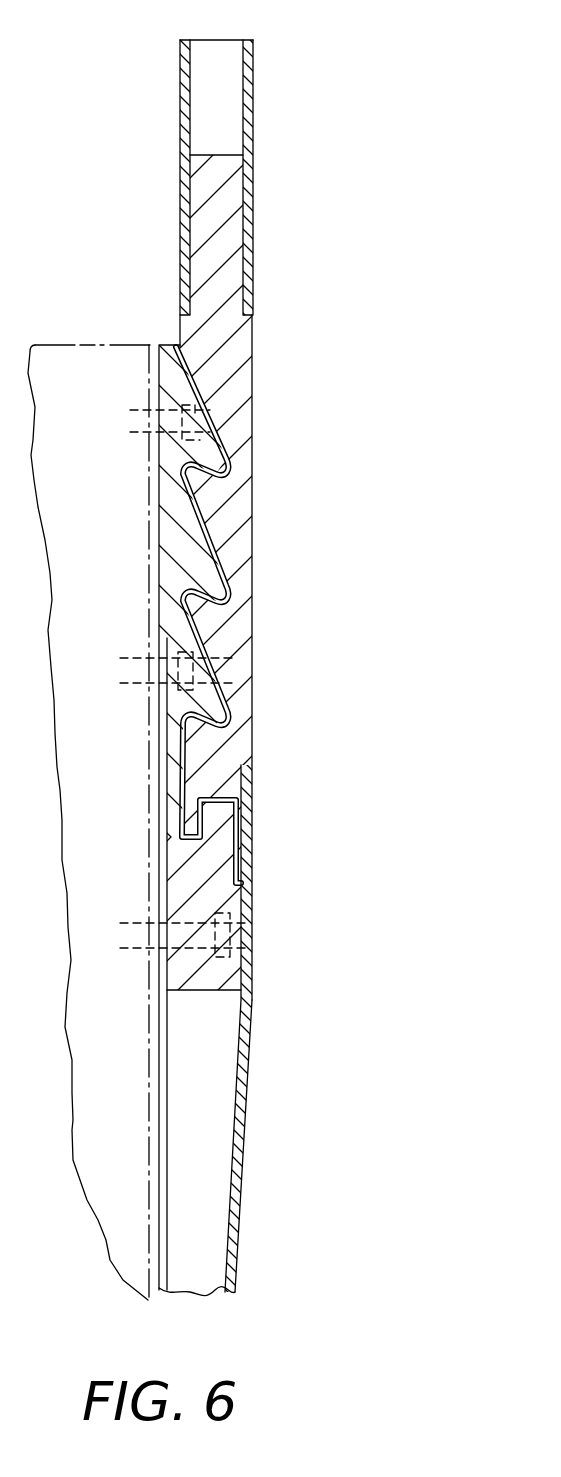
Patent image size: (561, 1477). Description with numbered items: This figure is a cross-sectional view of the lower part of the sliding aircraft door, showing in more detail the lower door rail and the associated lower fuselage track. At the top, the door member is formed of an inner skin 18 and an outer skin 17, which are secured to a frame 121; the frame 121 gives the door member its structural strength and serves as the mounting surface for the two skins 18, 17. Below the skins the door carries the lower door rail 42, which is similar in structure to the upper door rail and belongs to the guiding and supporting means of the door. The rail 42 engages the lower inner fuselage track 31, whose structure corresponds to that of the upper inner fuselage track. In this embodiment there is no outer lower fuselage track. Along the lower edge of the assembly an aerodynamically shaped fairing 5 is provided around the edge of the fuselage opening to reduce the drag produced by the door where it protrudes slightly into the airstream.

The frame 121 is at (221, 48).
The inner skin 18 is at (181, 245).
The outer skin 17 is at (252, 246).
The lower door rail 42 is at (255, 630).
The lower inner fuselage track 31 is at (180, 553).
The fairing 5 is at (250, 1075).